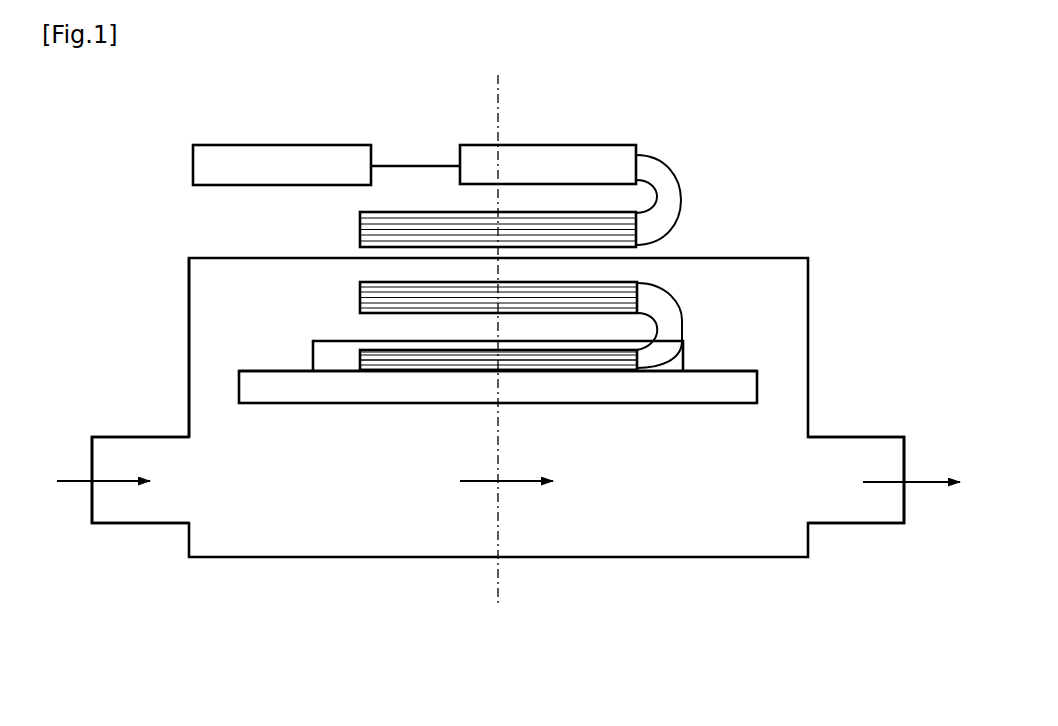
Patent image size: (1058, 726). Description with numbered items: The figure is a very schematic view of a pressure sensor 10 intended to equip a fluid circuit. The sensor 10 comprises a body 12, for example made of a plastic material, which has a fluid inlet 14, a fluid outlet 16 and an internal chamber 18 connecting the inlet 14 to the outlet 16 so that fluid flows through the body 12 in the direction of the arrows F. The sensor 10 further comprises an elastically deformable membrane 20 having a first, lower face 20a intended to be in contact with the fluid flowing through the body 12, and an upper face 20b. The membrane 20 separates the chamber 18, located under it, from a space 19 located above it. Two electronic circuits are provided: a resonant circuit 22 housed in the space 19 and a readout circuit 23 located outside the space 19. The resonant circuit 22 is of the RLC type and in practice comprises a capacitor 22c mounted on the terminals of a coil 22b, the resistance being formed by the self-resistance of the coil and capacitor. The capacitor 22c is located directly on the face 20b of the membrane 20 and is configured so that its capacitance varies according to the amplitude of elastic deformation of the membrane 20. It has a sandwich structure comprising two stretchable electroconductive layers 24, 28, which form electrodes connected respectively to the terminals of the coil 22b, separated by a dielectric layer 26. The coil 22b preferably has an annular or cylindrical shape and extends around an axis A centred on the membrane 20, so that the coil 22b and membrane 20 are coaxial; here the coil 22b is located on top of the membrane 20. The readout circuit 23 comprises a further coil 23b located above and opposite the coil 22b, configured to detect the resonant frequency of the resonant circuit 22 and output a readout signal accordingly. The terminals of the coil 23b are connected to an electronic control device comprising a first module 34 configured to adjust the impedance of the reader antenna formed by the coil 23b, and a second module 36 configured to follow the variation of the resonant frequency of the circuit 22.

The pressure sensor 10 is at (855, 204).
The body 12 is at (332, 559).
The fluid inlet 14 is at (140, 527).
The fluid outlet 16 is at (862, 525).
The internal chamber 18 is at (553, 508).
The space 19 is at (201, 320).
The elastically deformable membrane 20 is at (292, 392).
The first face 20a is at (432, 403).
The upper face 20b is at (737, 370).
The resonant circuit 22 is at (609, 351).
The coil 22b is at (660, 270).
The capacitor 22c is at (641, 385).
The readout circuit 23 is at (534, 197).
The further coil 23b is at (363, 232).
The electroconductive layer 24 is at (549, 370).
The dielectric layer 26 is at (590, 360).
The electroconductive layer 28 is at (600, 353).
The first module 34 is at (568, 143).
The second module 36 is at (245, 145).
The axis A is at (500, 115).
The arrows F is at (70, 485).